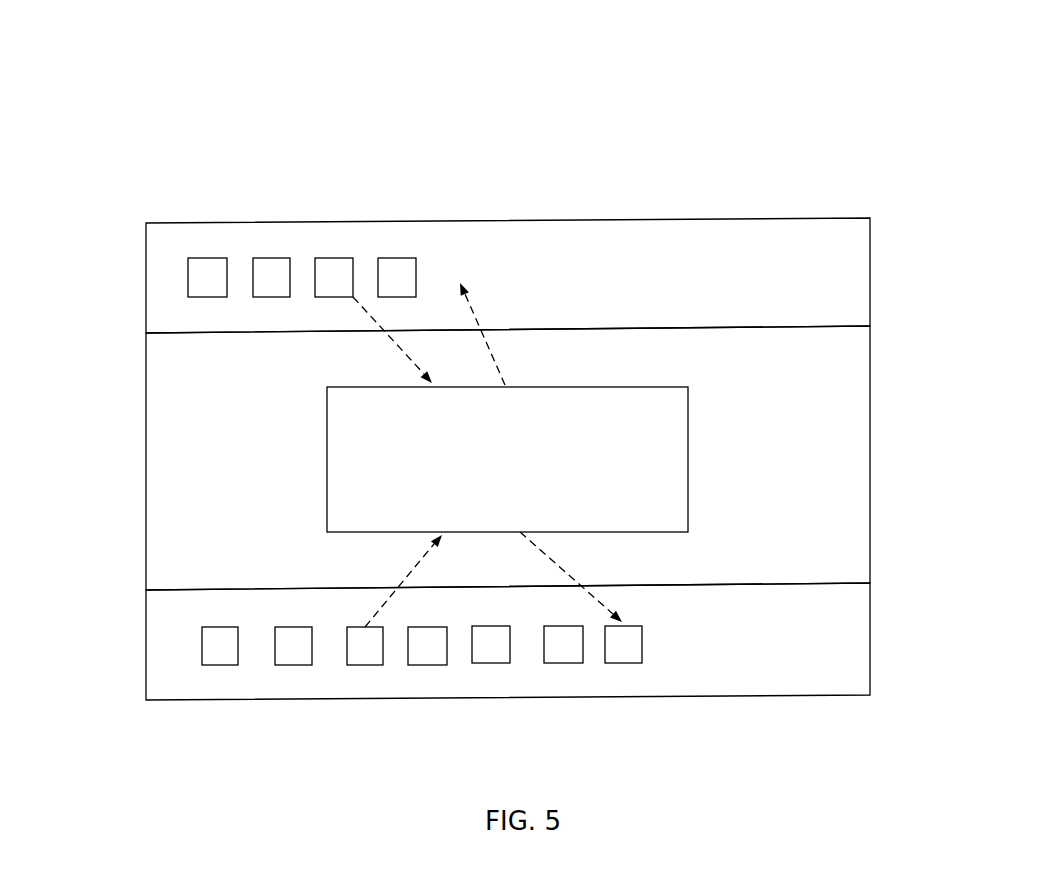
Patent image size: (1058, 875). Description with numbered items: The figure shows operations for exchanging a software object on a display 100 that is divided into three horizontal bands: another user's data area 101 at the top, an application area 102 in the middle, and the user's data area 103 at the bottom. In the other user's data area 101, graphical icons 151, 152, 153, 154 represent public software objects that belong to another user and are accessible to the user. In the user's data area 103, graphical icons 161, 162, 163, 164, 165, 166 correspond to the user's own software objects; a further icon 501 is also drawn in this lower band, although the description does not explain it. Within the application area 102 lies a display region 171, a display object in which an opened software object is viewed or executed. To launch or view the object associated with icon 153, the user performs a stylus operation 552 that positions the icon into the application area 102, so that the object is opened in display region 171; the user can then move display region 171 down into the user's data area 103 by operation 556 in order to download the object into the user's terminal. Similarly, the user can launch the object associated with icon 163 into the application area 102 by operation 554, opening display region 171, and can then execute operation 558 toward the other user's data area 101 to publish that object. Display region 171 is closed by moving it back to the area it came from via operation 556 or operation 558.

The display 100 is at (606, 39).
The other user's data area 101 is at (882, 310).
The application area 102 is at (882, 492).
The user's data area 103 is at (882, 671).
The display region 171 is at (327, 522).
The graphical icon 151 is at (210, 260).
The graphical icon 152 is at (270, 257).
The graphical icon 153 is at (332, 257).
The graphical icon 154 is at (397, 257).
The graphical icon 161 is at (222, 665).
The graphical icon 162 is at (295, 665).
The graphical icon 163 is at (368, 665).
The graphical icon 164 is at (430, 665).
The graphical icon 165 is at (502, 663).
The graphical icon 166 is at (572, 663).
The additional lower element 501 is at (644, 685).
The operation 552 is at (403, 352).
The operation 554 is at (414, 568).
The operation 556 is at (548, 557).
The operation 558 is at (497, 367).